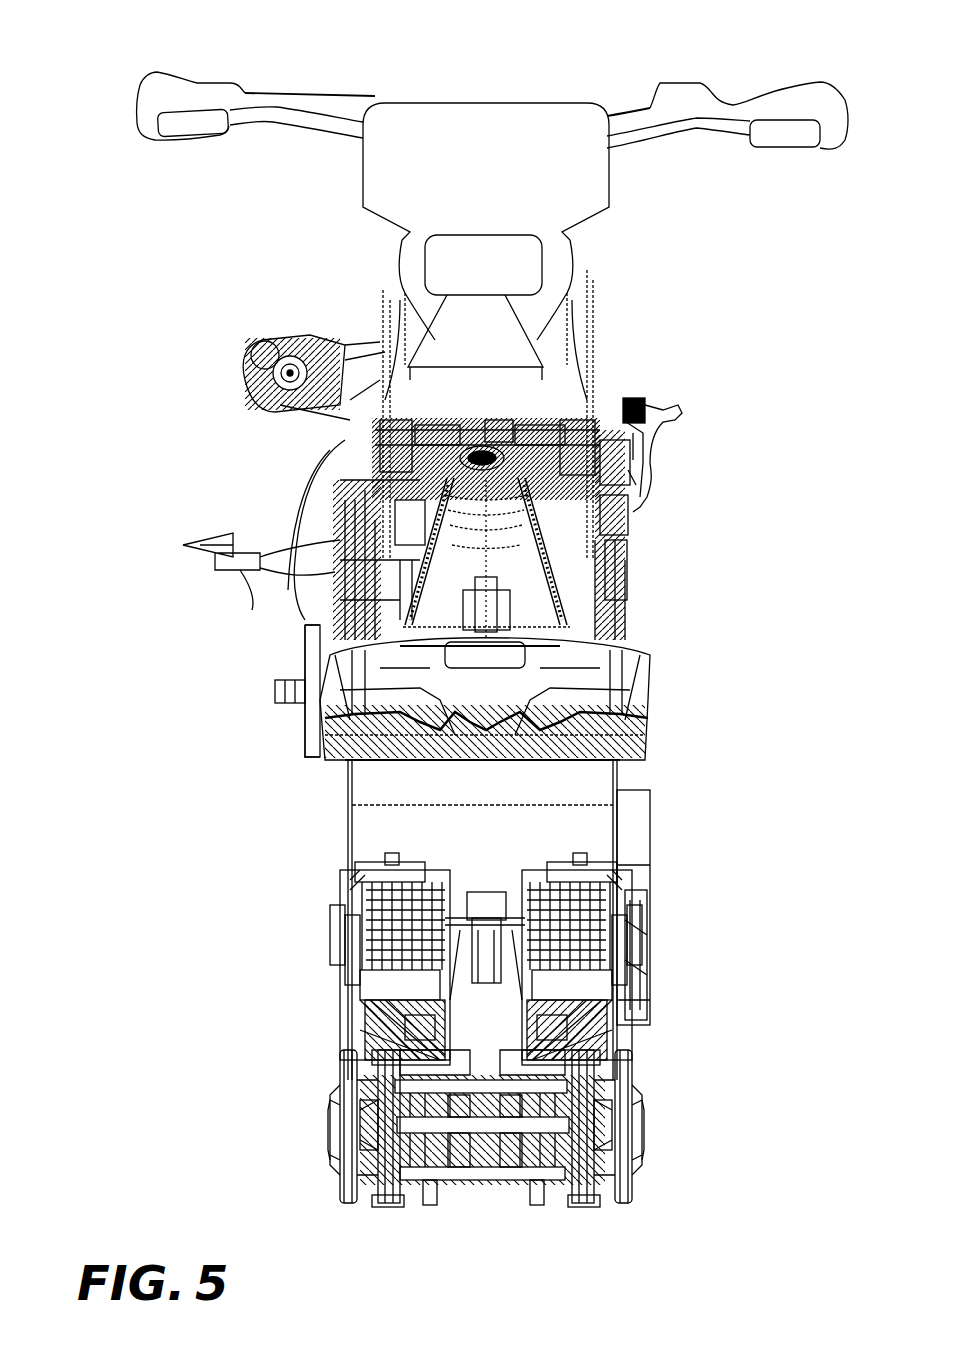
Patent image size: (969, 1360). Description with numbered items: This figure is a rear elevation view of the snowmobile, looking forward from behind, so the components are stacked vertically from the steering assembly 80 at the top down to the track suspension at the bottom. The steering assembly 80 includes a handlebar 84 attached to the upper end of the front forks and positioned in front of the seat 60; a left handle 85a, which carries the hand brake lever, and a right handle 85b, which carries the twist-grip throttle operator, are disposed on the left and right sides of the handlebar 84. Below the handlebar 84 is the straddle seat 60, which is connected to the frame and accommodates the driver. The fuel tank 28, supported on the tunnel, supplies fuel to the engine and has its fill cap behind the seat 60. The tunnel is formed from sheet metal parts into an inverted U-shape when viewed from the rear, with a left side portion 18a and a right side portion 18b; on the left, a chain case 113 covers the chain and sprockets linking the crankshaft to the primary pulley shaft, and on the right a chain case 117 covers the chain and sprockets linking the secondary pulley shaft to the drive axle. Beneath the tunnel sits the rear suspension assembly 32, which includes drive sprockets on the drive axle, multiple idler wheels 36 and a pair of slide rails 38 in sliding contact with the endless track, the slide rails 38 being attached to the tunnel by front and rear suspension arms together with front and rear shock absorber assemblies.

The steering assembly 80 is at (545, 78).
The handlebar 84 is at (368, 102).
The left handle 85a is at (270, 92).
The right handle 85b is at (770, 90).
The seat 60 is at (510, 350).
The fuel tank 28 is at (547, 663).
The chain case 113 is at (312, 645).
The left side portion 18a is at (347, 778).
The right side portion 18b is at (620, 822).
The chain case 117 is at (650, 906).
The rear suspension assembly 32 is at (665, 1122).
The idler wheels 36 is at (350, 1203).
The slide rails 38 is at (392, 1203).